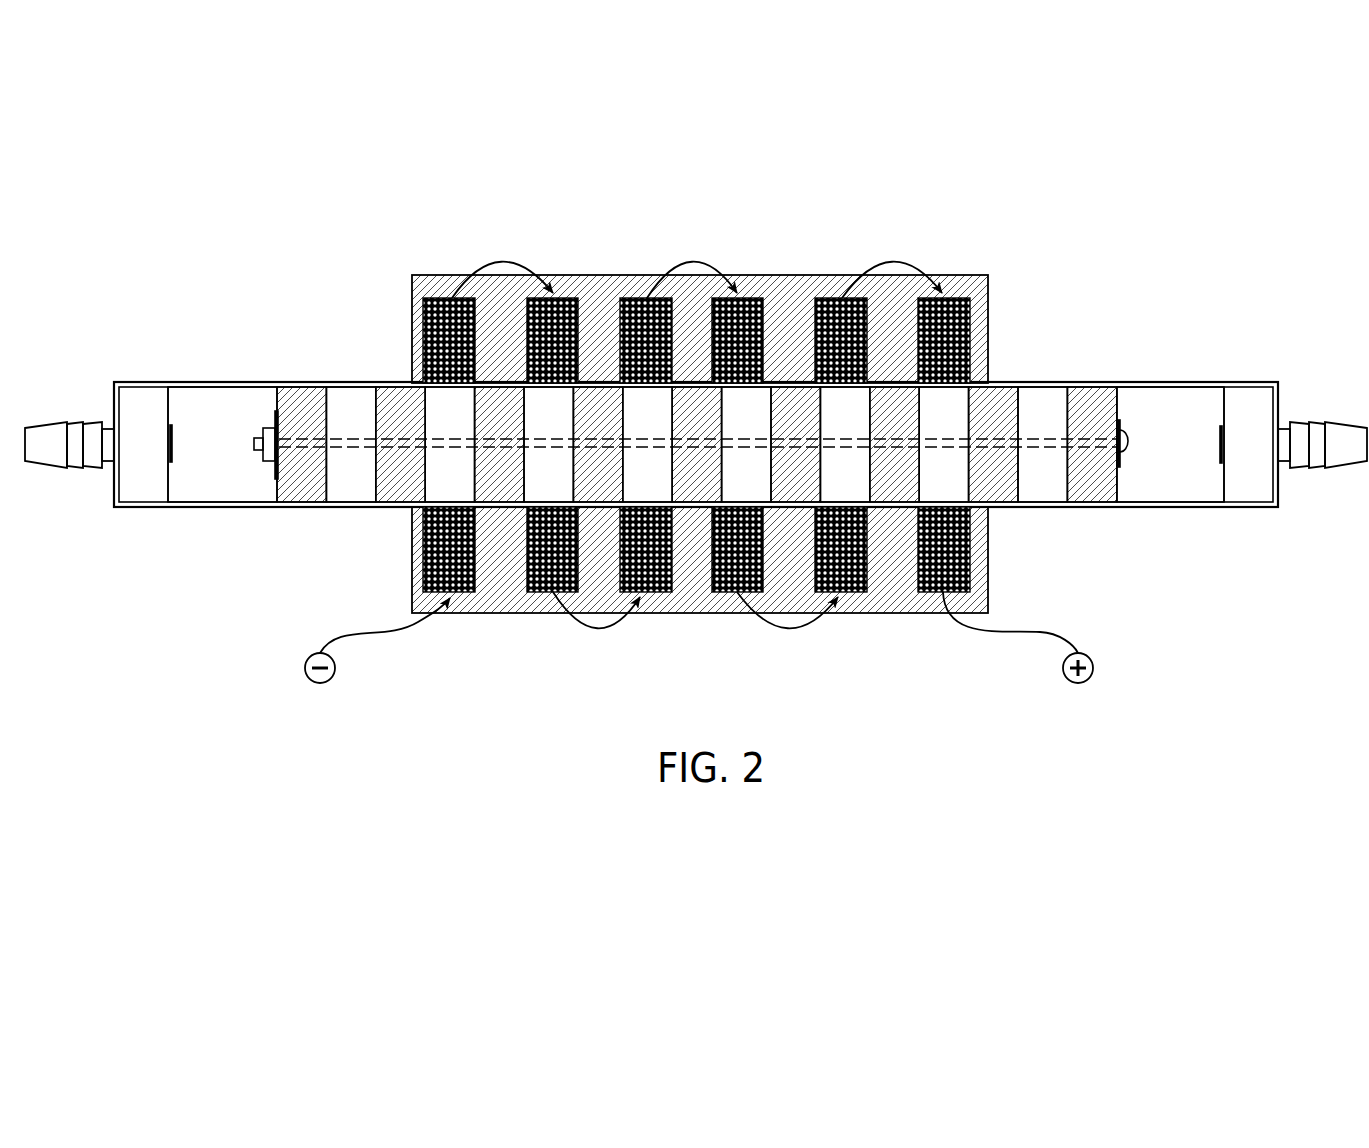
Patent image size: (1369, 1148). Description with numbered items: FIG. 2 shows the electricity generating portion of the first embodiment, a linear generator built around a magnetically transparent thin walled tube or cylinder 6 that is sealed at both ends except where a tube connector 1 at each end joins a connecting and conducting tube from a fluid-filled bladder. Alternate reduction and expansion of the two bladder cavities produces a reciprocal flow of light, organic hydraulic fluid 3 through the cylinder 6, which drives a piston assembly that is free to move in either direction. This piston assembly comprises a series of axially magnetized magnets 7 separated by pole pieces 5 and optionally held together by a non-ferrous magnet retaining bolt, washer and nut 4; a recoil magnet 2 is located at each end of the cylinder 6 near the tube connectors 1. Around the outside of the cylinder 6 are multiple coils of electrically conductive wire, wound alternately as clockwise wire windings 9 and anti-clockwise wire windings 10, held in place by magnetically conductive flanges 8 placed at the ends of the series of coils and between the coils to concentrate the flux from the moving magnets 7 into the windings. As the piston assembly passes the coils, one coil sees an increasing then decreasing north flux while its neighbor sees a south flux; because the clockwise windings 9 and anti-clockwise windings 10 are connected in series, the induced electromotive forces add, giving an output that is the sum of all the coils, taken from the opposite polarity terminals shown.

The tube connector 1 is at (50, 473).
The recoil magnet 2 is at (147, 469).
The light organic hydraulic fluid 3 is at (205, 418).
The non-ferrous magnet retaining bolt, washer and nut 4 is at (263, 468).
The pole piece 5 is at (307, 461).
The thin walled tube (cylinder) 6 is at (219, 382).
The axially magnetized magnet 7 is at (355, 413).
The magnetically conductive flanges 8 is at (993, 302).
The clockwise wire windings 9 is at (453, 573).
The anti-clockwise wire windings 10 is at (560, 309).